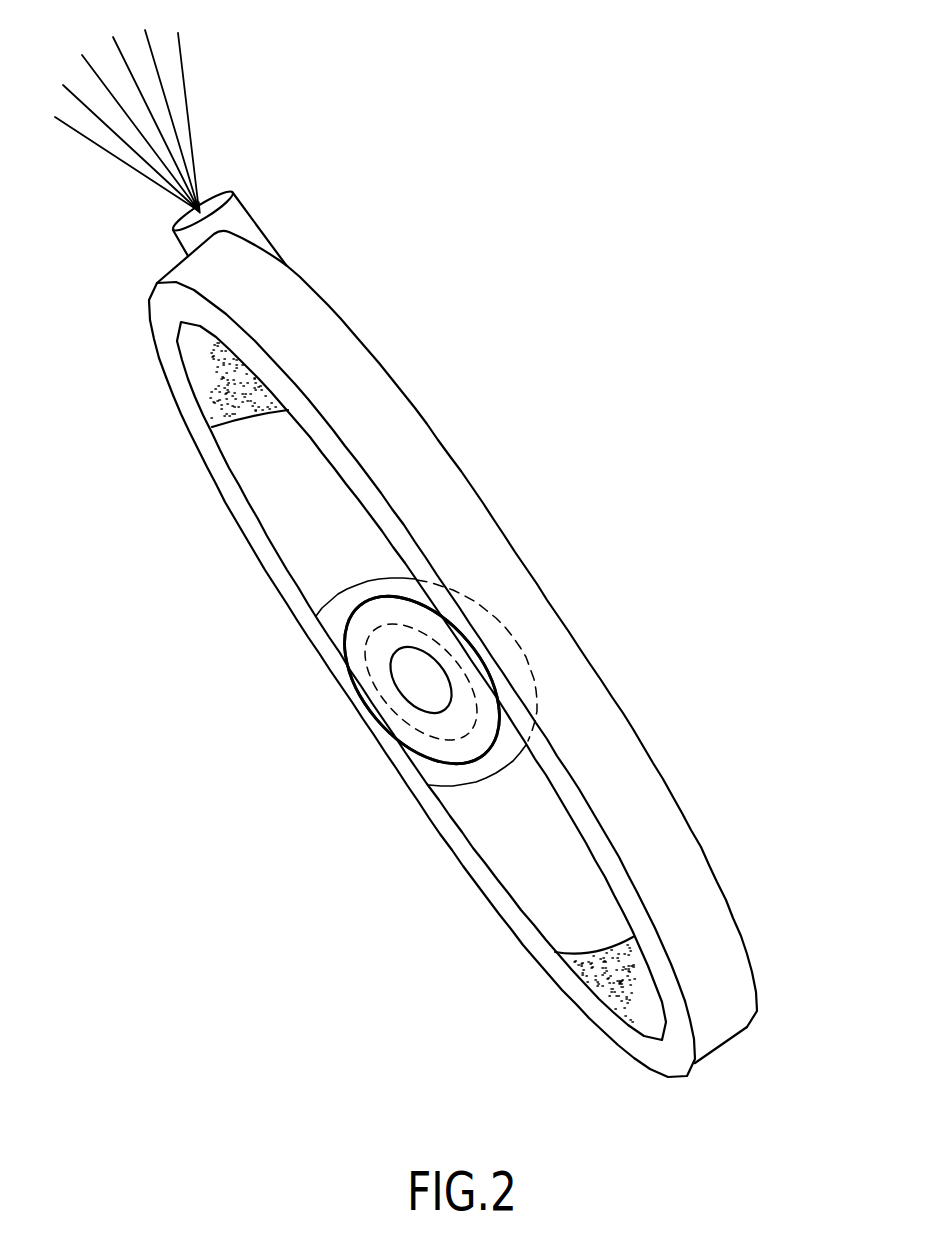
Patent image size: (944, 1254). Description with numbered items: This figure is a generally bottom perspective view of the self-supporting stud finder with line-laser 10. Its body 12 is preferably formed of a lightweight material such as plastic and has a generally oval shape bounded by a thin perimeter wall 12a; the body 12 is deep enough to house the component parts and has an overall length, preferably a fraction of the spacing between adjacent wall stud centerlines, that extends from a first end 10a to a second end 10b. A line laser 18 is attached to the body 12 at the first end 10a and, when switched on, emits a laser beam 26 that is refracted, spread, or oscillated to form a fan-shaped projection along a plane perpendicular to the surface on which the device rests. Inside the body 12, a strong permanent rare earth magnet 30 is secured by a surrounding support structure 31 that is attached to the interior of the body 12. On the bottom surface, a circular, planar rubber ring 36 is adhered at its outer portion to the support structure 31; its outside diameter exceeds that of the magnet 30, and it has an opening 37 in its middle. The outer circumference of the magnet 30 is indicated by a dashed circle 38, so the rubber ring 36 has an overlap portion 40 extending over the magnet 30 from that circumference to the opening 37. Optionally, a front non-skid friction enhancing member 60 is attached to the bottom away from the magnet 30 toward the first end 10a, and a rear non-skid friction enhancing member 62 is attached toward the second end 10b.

The self-supporting stud finder with line-laser 10 is at (425, 665).
The first end 10a is at (168, 268).
The second end 10b is at (725, 1047).
The body 12 is at (668, 867).
The thin perimeter wall 12a is at (508, 910).
The line laser 18 is at (250, 225).
The laser beam 26 is at (192, 112).
The magnet 30 is at (480, 607).
The support structure 31 is at (327, 618).
The rubber ring 36 is at (423, 757).
The opening 37 is at (417, 707).
The dashed circle 38 is at (367, 647).
The overlap portion 40 is at (450, 670).
The front non-skid friction enhancing member 60 is at (212, 387).
The rear non-skid friction enhancing member 62 is at (613, 992).